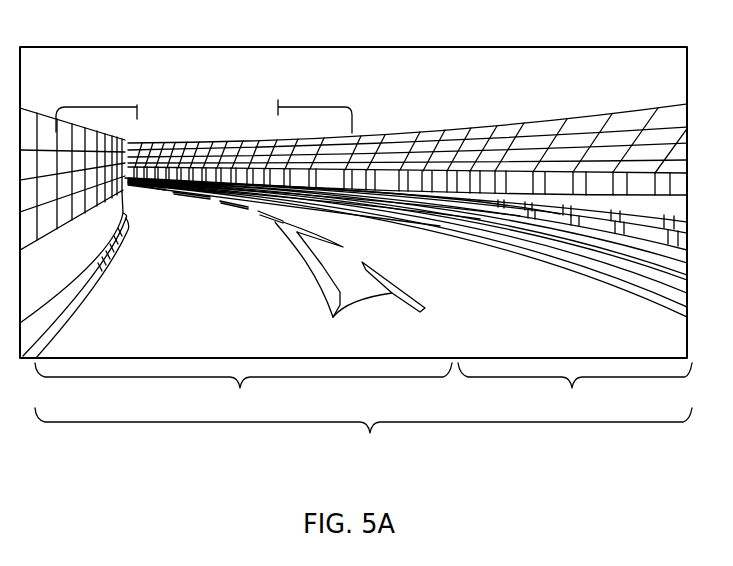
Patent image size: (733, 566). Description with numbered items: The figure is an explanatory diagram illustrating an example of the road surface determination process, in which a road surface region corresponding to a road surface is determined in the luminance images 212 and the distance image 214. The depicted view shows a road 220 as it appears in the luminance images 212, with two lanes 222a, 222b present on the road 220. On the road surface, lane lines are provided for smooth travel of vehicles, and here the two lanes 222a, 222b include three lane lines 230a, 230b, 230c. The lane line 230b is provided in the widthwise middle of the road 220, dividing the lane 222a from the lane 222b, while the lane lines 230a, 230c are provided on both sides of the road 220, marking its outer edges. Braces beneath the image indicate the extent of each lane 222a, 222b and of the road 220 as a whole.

The luminance images 212 is at (362, 180).
The distance image 214 is at (632, 38).
The road 220 is at (363, 440).
The lane 222a is at (243, 393).
The lane 222b is at (575, 393).
The lane line 230a is at (73, 315).
The lane line 230b is at (341, 282).
The lane line 230c is at (655, 297).